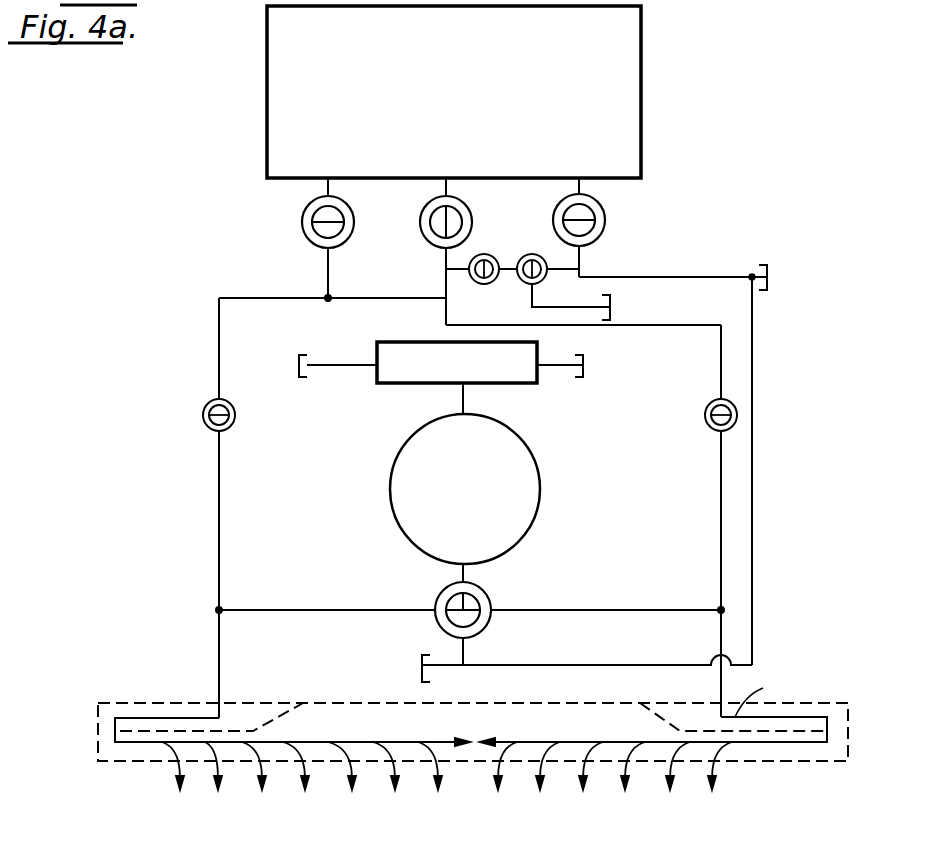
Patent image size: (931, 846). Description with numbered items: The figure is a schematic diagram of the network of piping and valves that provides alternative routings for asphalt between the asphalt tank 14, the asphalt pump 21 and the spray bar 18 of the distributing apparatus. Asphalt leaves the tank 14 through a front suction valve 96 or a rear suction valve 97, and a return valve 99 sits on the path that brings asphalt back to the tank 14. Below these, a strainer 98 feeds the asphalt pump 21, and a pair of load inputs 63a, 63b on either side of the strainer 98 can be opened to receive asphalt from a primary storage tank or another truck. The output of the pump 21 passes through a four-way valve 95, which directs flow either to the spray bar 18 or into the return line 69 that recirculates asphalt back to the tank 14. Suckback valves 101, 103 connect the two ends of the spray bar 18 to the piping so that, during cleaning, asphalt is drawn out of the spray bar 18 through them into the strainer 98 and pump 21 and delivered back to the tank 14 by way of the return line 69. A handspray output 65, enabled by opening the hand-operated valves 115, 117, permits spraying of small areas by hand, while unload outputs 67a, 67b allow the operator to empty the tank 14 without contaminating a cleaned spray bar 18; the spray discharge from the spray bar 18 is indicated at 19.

The asphalt tank 14 is at (454, 92).
The suction valve 96 is at (352, 230).
The suction valve 97 is at (470, 212).
The return valve 99 is at (603, 222).
The valve 115 is at (505, 246).
The valve 117 is at (548, 246).
The handspray output 65 is at (613, 300).
The unload output 67b is at (769, 280).
The return line 69 is at (753, 532).
The unload output 67a is at (420, 670).
The strainer 98 is at (508, 384).
The load input 63a is at (298, 368).
The load input 63b is at (585, 371).
The suckback valve 101 is at (224, 432).
The suckback valve 103 is at (712, 430).
The asphalt pump 21 is at (465, 489).
The four-way valve 95 is at (441, 596).
The spray bar 18 is at (160, 700).
The spray nozzles 19 is at (441, 766).